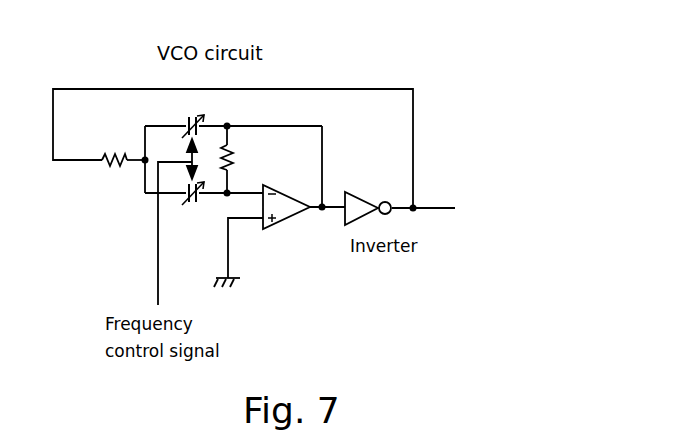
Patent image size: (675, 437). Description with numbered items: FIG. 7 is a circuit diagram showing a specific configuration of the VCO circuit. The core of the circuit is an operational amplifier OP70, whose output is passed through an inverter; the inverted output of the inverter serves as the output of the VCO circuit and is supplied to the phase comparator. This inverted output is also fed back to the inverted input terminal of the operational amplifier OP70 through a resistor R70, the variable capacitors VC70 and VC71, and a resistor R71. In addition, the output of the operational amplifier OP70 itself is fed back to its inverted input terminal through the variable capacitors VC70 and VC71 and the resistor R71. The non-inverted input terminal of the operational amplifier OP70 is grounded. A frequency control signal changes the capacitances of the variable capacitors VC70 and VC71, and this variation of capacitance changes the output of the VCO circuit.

The resistor R70 is at (111, 177).
The resistor R71 is at (249, 157).
The variable capacitor VC71 is at (177, 113).
The variable capacitor VC70 is at (193, 209).
The operational amplifier OP70 is at (283, 219).